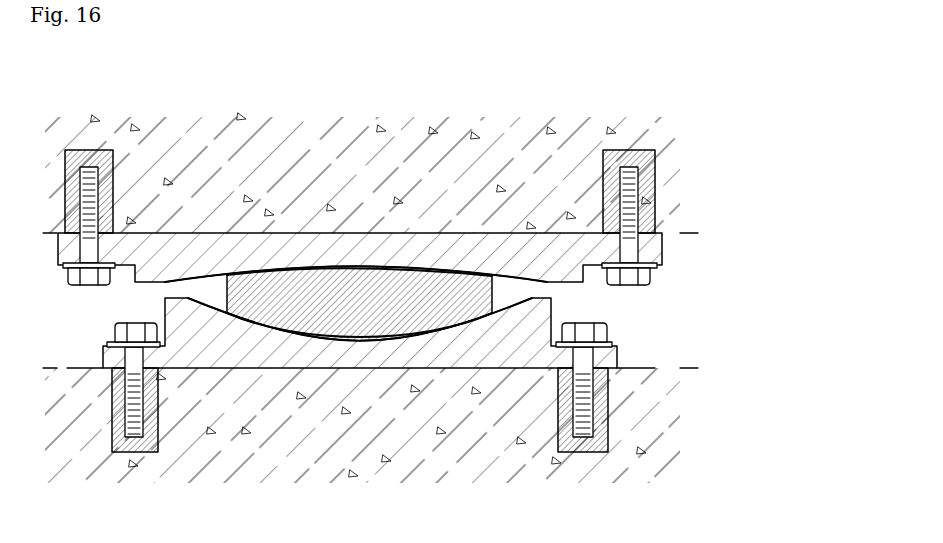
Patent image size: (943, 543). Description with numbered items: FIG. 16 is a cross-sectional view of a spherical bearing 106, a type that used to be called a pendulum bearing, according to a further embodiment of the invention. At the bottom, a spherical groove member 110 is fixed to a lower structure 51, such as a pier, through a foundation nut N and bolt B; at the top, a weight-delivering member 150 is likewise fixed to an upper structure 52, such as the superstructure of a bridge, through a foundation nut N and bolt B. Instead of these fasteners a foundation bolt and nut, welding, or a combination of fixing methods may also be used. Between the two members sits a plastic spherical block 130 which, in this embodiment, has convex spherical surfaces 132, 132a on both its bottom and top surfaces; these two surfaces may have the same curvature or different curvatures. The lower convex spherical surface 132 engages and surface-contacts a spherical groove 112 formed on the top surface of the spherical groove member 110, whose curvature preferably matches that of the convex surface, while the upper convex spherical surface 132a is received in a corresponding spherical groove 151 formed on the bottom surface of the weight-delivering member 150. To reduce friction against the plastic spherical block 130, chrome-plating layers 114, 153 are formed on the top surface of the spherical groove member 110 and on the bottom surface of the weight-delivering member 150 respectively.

The spherical bearing 106 is at (364, 275).
The upper structure 52 is at (135, 138).
The lower structure 51 is at (125, 462).
The spherical groove 151 is at (360, 185).
The weight-delivering member 150 is at (490, 248).
The chrome-plating layer 153 is at (185, 290).
The spherical groove 112 is at (360, 404).
The spherical groove member 110 is at (510, 348).
The chrome-plating layer 114 is at (210, 290).
The plastic spherical block 130 is at (356, 300).
The convex spherical surface 132a is at (268, 265).
The convex spherical surface 132 is at (345, 342).
The bolt B is at (604, 331).
The foundation nut N is at (600, 406).